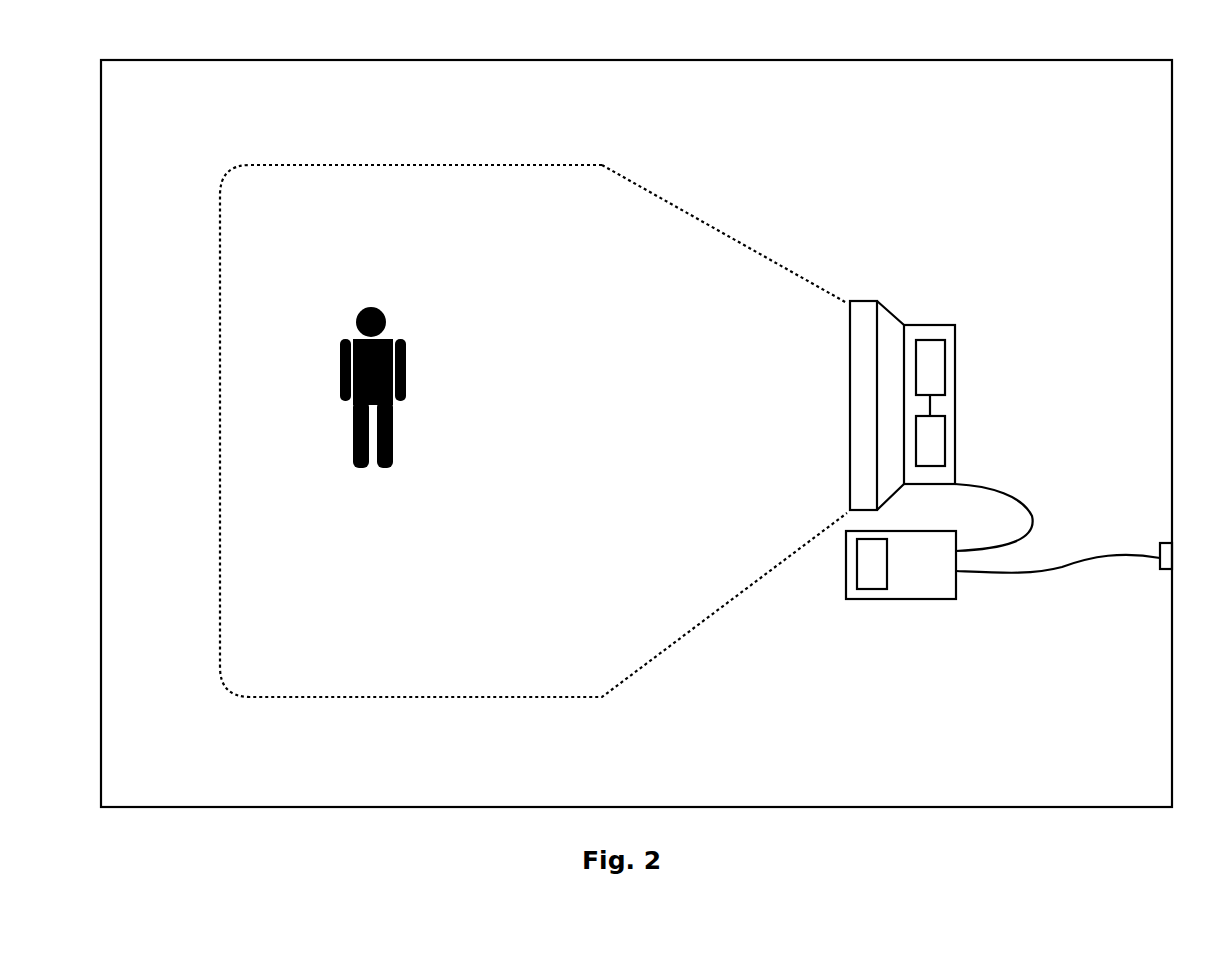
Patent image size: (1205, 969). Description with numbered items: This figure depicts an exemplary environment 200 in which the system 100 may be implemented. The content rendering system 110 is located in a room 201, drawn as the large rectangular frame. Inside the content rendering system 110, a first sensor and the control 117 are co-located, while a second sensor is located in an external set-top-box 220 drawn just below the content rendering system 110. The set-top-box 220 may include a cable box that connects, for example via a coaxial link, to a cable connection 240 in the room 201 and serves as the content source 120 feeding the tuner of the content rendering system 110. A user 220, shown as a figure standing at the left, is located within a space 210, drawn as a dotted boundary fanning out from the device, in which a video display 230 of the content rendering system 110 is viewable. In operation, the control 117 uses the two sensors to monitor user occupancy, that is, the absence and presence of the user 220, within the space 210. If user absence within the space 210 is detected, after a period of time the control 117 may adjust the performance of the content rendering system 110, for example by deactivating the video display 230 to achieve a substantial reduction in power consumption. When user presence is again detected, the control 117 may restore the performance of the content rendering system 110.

The system 100 is at (1070, 265).
The content rendering system 110 is at (907, 314).
The control 117 is at (947, 442).
The content source 120 is at (1054, 580).
The environment 200 is at (102, 37).
The room 201 is at (190, 122).
The space 210 is at (556, 405).
The set-top-box 220 is at (406, 335).
The video display 230 is at (844, 392).
The cable connection 240 is at (1153, 546).